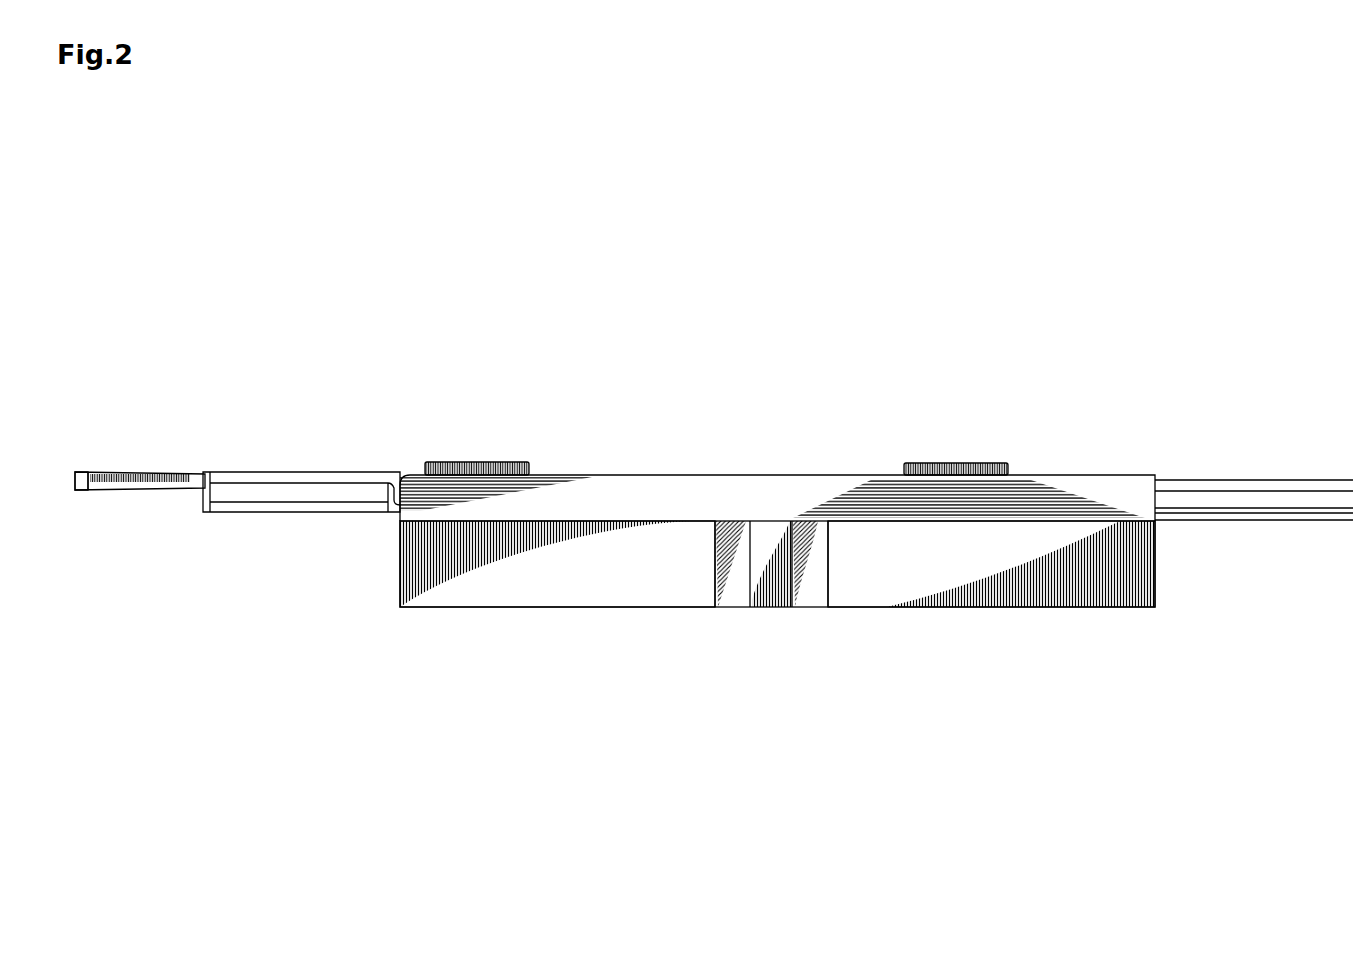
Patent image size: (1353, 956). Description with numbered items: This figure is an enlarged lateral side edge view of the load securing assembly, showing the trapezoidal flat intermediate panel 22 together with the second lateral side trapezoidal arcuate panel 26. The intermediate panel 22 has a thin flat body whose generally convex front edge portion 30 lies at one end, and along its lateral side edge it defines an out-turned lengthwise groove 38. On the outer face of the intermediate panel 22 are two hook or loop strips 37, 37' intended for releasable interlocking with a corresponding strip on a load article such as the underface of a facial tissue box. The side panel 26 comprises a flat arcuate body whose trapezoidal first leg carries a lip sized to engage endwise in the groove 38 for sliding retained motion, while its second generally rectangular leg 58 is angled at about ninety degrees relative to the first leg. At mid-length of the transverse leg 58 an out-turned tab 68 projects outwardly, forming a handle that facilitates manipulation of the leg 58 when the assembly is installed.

The intermediate panel 22 is at (138, 472).
The front edge portion 30 is at (74, 477).
The lengthwise groove 38 is at (258, 492).
The second lateral side trapezoidal arcuate panel 26 is at (617, 606).
The second generally rectangular leg 58 is at (624, 587).
The out-turned tab 68 is at (763, 565).
The hook or loop strip 37 is at (967, 421).
The hook or loop strip 37' is at (490, 422).